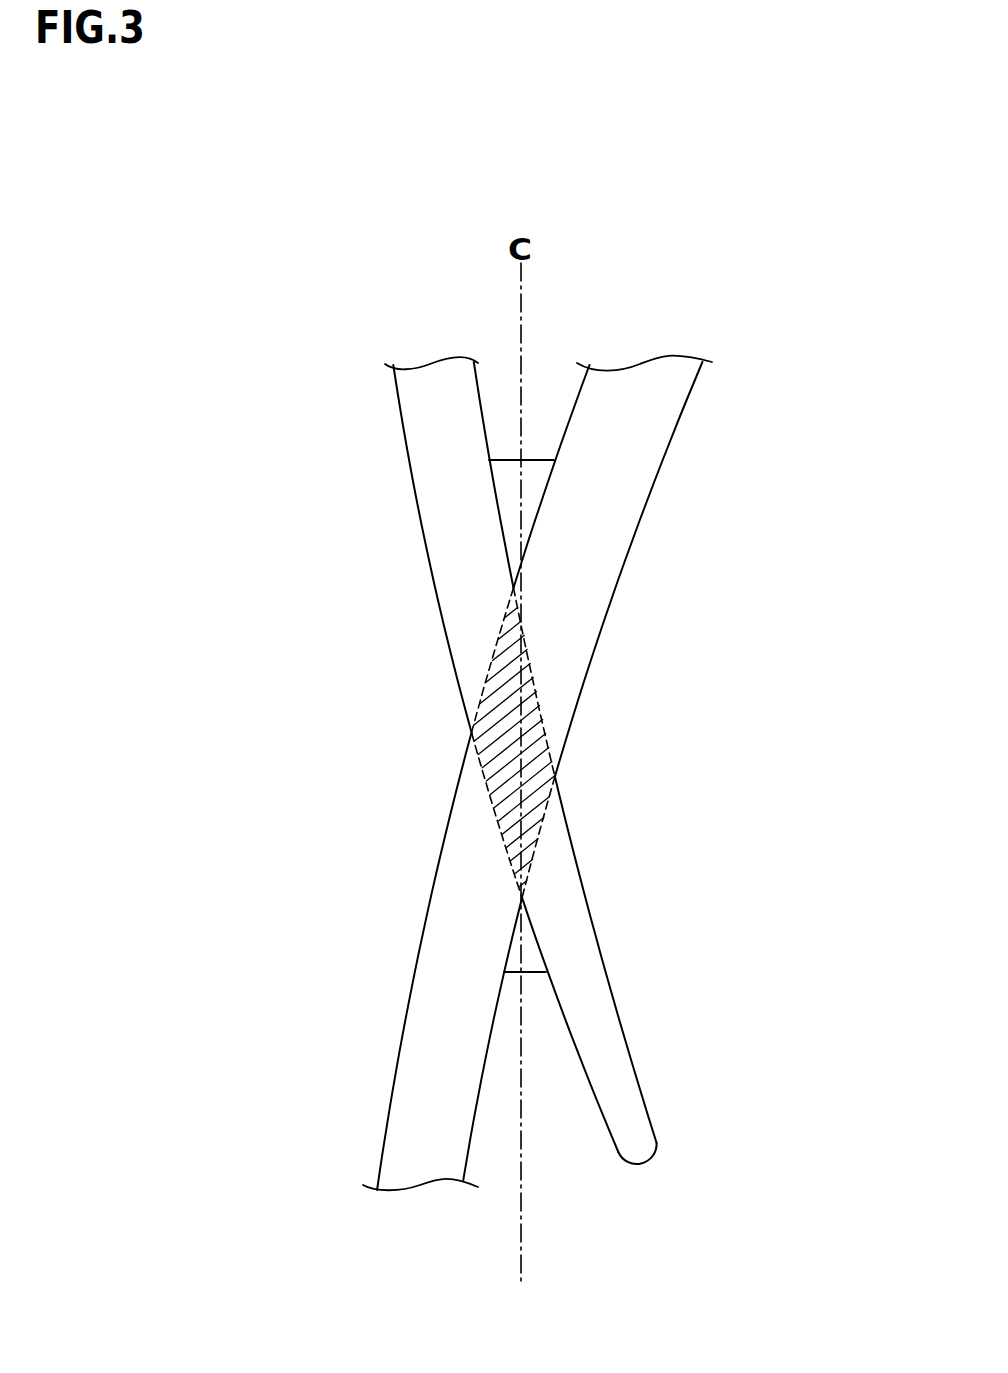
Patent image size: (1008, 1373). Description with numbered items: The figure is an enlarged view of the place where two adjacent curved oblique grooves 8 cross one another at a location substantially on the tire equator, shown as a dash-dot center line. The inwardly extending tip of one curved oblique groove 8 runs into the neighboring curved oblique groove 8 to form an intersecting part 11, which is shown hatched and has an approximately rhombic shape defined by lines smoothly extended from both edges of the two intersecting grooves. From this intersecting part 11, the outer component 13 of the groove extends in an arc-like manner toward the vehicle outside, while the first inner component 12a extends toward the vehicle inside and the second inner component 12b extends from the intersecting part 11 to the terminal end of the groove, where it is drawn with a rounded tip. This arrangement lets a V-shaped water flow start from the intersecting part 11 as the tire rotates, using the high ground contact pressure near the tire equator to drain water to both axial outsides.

The curved oblique groove 8 is at (427, 442).
The intersecting part 11 is at (500, 657).
The first inner component 12a is at (650, 430).
The second inner component 12b is at (620, 1070).
The outer component 13 is at (418, 1057).